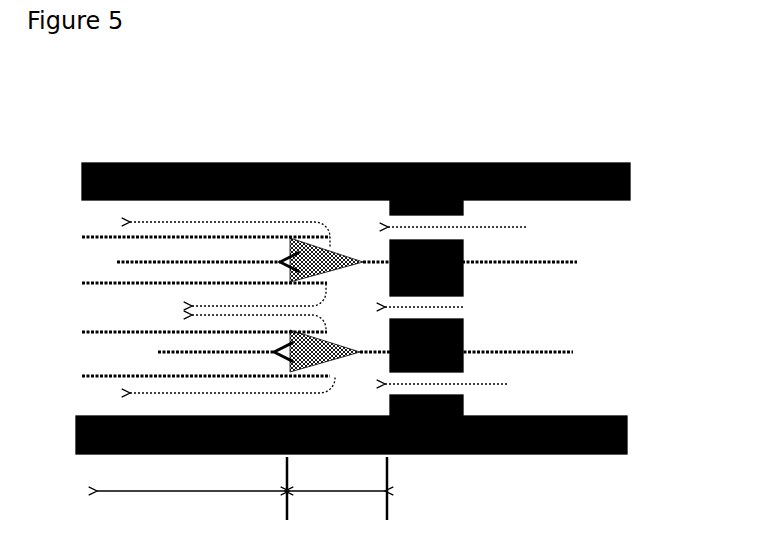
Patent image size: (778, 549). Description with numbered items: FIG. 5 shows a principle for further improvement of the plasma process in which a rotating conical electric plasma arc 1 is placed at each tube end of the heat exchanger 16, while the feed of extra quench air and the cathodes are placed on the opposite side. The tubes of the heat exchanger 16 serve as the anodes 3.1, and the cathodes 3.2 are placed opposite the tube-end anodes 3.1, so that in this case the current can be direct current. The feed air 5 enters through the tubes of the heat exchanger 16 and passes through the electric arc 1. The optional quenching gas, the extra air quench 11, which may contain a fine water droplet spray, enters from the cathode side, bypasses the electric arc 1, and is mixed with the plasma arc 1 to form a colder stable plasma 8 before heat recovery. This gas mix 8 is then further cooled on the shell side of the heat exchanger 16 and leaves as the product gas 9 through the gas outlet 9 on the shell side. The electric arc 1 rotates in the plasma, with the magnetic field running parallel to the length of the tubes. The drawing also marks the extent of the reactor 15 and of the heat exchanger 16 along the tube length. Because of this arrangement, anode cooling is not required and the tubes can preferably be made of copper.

The electric plasma arc 1 is at (356, 345).
The anode 3.1 is at (262, 258).
The cathode 3.2 is at (553, 262).
The feed air 5 is at (188, 308).
The colder stable plasma 8 is at (319, 357).
The product gas outlet 9 is at (217, 309).
The extra air quench 11 is at (472, 306).
The reactor 15 is at (338, 488).
The heat exchanger 16 is at (192, 488).